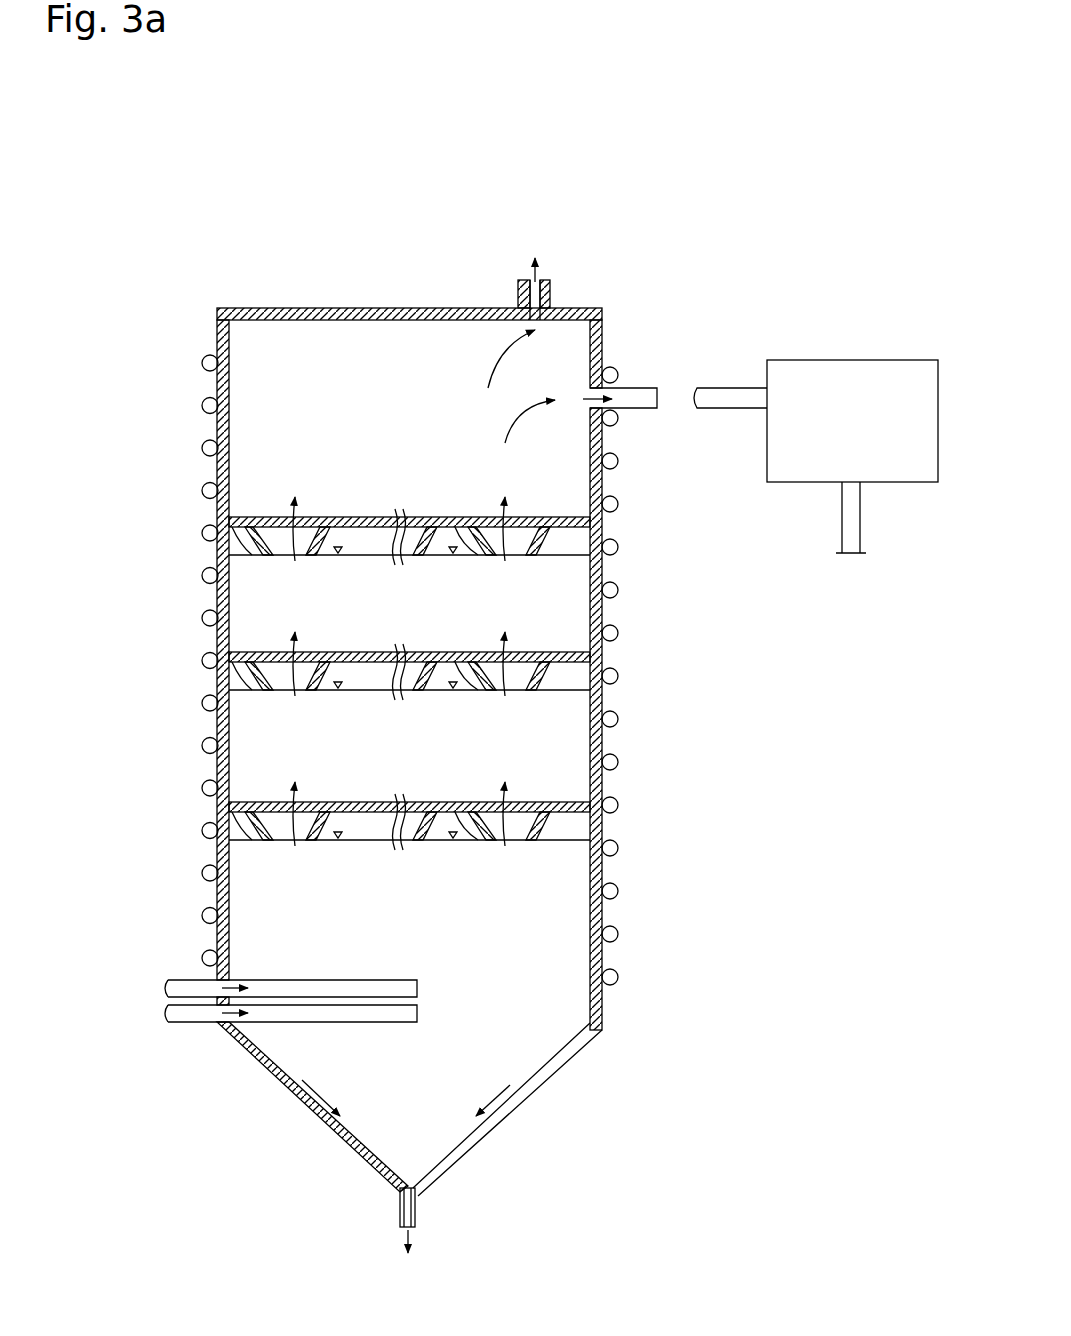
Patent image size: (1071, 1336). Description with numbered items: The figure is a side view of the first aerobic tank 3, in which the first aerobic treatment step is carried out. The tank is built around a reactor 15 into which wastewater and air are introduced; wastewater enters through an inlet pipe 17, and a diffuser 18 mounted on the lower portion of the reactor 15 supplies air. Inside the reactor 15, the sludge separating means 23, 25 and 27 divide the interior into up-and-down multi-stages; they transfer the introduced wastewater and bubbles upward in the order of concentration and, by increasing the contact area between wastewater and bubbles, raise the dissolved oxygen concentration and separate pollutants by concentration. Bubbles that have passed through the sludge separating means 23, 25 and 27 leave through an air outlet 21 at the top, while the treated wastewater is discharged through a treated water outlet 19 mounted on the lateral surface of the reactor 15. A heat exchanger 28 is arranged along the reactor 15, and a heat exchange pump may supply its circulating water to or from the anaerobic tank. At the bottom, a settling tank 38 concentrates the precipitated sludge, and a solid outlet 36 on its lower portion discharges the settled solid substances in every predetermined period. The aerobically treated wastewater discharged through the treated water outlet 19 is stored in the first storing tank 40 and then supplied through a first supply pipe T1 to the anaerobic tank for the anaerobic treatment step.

The first aerobic tank 3 is at (607, 300).
The reactor 15 is at (606, 320).
The inlet pipe 17 is at (168, 1000).
The diffuser 18 is at (200, 1013).
The treated water outlet 19 is at (656, 388).
The air outlet 21 is at (548, 283).
The sludge separating means 23 is at (258, 826).
The sludge separating means 25 is at (258, 680).
The sludge separating means 27 is at (272, 494).
The heat exchanger 28 is at (201, 366).
The solid outlet 36 is at (415, 1215).
The settling tank 38 is at (518, 1108).
The first storing tank 40 is at (840, 368).
The first supply pipe T1 is at (850, 550).